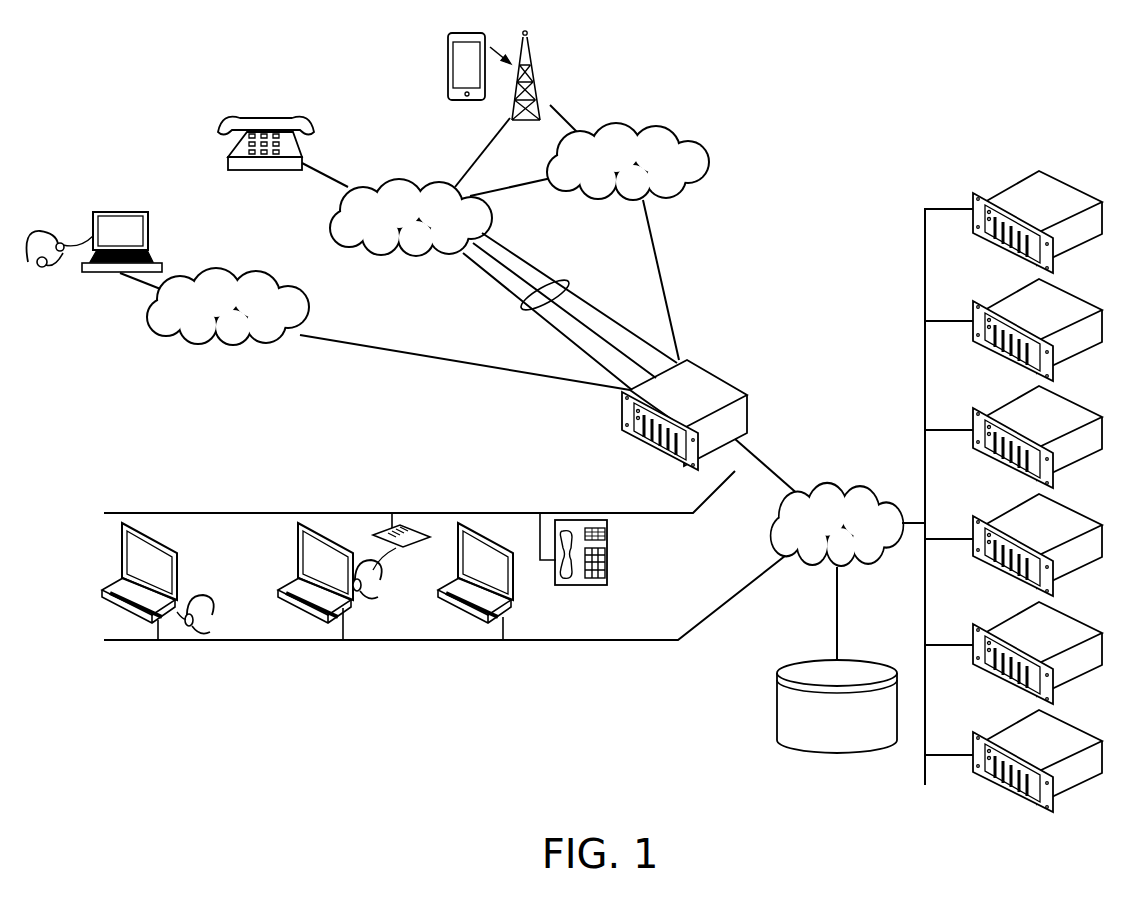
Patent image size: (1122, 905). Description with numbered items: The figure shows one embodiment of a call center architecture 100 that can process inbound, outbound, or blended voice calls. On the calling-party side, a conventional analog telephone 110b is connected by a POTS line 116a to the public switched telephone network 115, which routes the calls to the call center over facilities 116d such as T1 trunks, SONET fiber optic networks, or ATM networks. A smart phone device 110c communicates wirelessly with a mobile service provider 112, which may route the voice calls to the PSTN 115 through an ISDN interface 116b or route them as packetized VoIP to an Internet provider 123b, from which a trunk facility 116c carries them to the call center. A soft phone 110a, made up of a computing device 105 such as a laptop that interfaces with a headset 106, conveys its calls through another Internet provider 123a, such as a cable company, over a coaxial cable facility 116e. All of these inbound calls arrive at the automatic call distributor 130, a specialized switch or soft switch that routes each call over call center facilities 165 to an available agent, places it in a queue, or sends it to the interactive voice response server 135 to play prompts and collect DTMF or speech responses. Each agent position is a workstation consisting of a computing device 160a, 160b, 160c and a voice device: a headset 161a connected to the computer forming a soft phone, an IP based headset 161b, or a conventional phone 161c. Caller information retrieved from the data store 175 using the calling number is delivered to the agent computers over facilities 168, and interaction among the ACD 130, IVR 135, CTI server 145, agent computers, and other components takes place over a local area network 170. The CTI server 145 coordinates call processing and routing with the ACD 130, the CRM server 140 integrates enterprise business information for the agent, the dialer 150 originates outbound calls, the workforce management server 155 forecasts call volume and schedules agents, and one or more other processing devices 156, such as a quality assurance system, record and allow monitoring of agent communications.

The call center architecture 100 is at (846, 110).
The computing device 105 is at (92, 238).
The headset 106 is at (41, 270).
The soft phone 110a is at (123, 195).
The conventional analog telephone 110b is at (302, 157).
The smart phone device 110c is at (447, 70).
The mobile service provider 112 is at (540, 87).
The public switched telephone network 115 is at (395, 240).
The POTS line 116a is at (333, 182).
The ISDN interface 116b is at (486, 134).
The facility 116c is at (663, 280).
The facilities 116d is at (527, 310).
The coaxial cable facility 116e is at (363, 346).
The Internet provider 123a is at (207, 330).
The Internet provider 123b is at (607, 184).
The automatic call distributor 130 is at (676, 415).
The interactive voice response server 135 is at (1024, 223).
The CRM server 140 is at (1024, 331).
The CTI server 145 is at (1024, 438).
The dialer 150 is at (1024, 546).
The workforce management server 155 is at (1024, 654).
The processing device 156 is at (1024, 762).
The computing device 160a is at (177, 570).
The computing device 160b is at (352, 558).
The computing device 160c is at (518, 573).
The headset 161a is at (213, 617).
The IP based headset 161b is at (383, 580).
The conventional phone 161c is at (592, 587).
The call center facilities 165 is at (640, 511).
The facilities 168 is at (648, 642).
The local area network 170 is at (776, 549).
The data store 175 is at (821, 737).